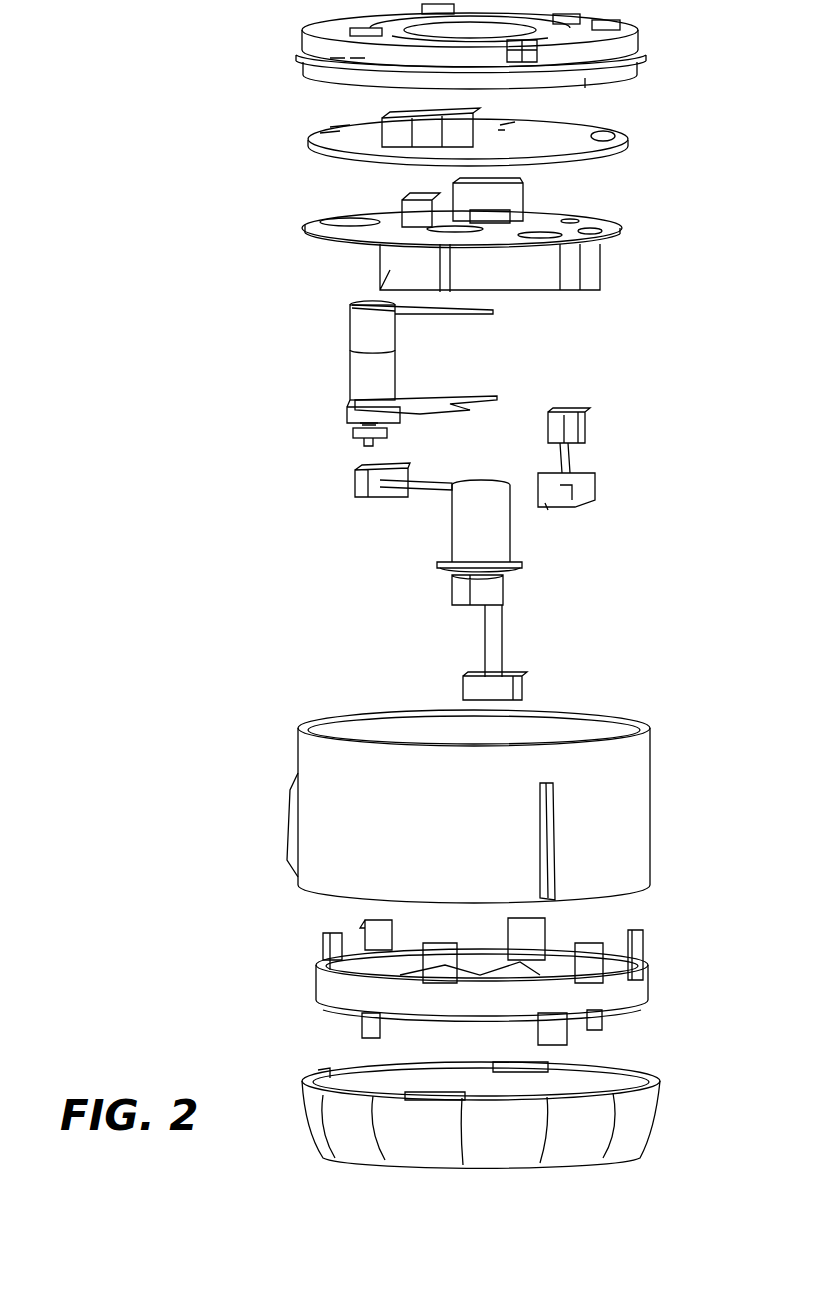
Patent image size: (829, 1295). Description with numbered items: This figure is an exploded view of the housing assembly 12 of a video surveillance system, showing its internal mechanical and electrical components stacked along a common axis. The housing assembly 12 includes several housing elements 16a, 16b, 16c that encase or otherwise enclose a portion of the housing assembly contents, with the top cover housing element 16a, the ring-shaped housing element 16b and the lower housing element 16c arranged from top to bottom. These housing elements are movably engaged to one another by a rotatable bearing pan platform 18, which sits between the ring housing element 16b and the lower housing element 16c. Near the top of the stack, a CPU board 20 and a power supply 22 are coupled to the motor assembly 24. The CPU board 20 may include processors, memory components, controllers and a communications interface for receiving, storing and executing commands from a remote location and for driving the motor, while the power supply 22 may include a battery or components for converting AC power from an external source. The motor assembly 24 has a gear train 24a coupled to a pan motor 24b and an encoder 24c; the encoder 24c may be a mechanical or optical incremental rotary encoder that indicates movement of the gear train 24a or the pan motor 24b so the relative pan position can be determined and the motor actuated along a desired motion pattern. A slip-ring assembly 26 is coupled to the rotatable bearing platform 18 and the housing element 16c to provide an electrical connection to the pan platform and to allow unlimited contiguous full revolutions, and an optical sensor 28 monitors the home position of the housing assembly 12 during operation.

The housing assembly 12 is at (273, 8).
The housing element 16a is at (650, 43).
The housing element 16b is at (628, 795).
The housing element 16c is at (658, 1116).
The rotatable bearing pan platform 18 is at (630, 983).
The CPU board 20 is at (590, 136).
The power supply 22 is at (597, 262).
The motor assembly 24 is at (328, 305).
The gear train 24a is at (385, 432).
The pan motor 24b is at (386, 359).
The encoder 24c is at (497, 312).
The slip-ring assembly 26 is at (494, 537).
The optical sensor 28 is at (595, 483).